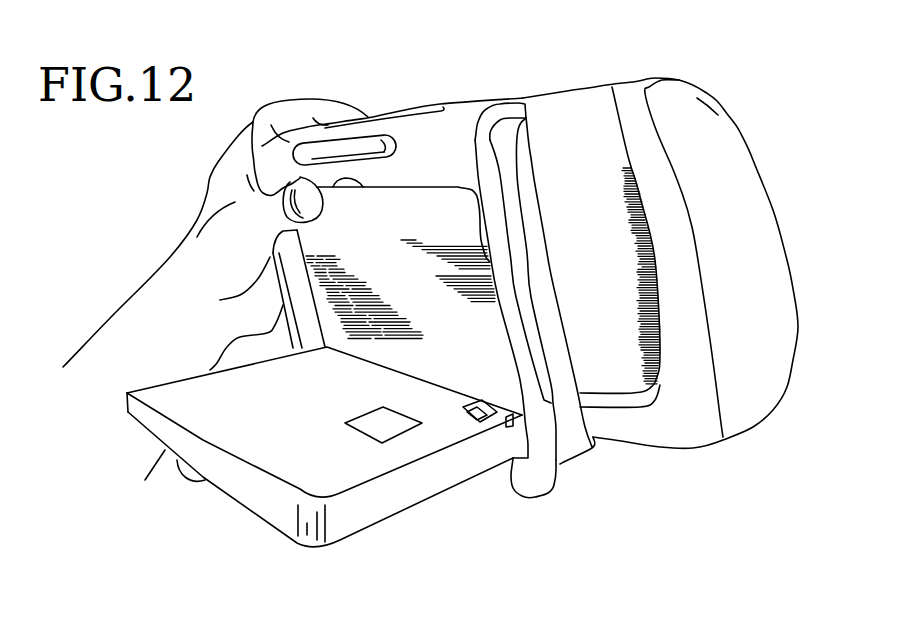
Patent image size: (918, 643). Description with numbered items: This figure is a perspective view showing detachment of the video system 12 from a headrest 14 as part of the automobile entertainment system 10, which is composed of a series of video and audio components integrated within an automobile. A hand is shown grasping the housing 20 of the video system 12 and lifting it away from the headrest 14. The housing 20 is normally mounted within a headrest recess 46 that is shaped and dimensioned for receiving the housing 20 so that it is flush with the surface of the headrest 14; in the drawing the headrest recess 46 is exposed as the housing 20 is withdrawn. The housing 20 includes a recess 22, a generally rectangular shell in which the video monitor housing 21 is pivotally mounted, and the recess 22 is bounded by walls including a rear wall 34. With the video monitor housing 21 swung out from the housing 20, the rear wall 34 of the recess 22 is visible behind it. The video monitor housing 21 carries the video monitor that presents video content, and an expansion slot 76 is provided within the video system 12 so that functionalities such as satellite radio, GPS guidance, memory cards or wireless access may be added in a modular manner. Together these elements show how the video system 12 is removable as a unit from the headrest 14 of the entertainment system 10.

The automobile entertainment system 10 is at (524, 516).
The video system 12 is at (278, 152).
The headrest 14 is at (760, 223).
The housing 20 is at (452, 111).
The video monitor housing 21 is at (195, 397).
The recess 22 is at (397, 212).
The rear wall 34 is at (467, 218).
The headrest recess 46 is at (617, 218).
The expansion slot 76 is at (400, 433).